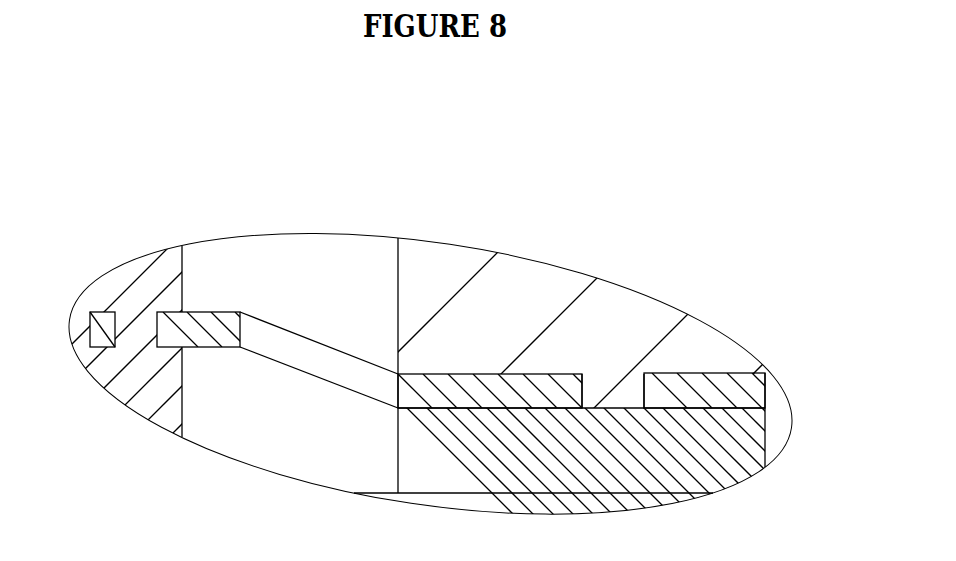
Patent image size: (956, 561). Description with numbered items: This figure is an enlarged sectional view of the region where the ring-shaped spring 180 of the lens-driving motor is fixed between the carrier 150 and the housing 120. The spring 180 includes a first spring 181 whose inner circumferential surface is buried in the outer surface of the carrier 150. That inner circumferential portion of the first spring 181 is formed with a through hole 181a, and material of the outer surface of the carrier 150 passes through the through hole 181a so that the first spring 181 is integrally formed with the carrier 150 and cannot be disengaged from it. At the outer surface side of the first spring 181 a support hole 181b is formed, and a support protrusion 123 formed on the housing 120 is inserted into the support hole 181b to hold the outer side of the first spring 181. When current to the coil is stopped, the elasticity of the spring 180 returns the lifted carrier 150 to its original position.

The housing 120 is at (705, 353).
The support protrusion 123 is at (597, 390).
The carrier 150 is at (150, 290).
The spring 180 is at (432, 148).
The first spring 181 is at (435, 392).
The through hole 181a is at (156, 328).
The support hole 181b is at (642, 398).